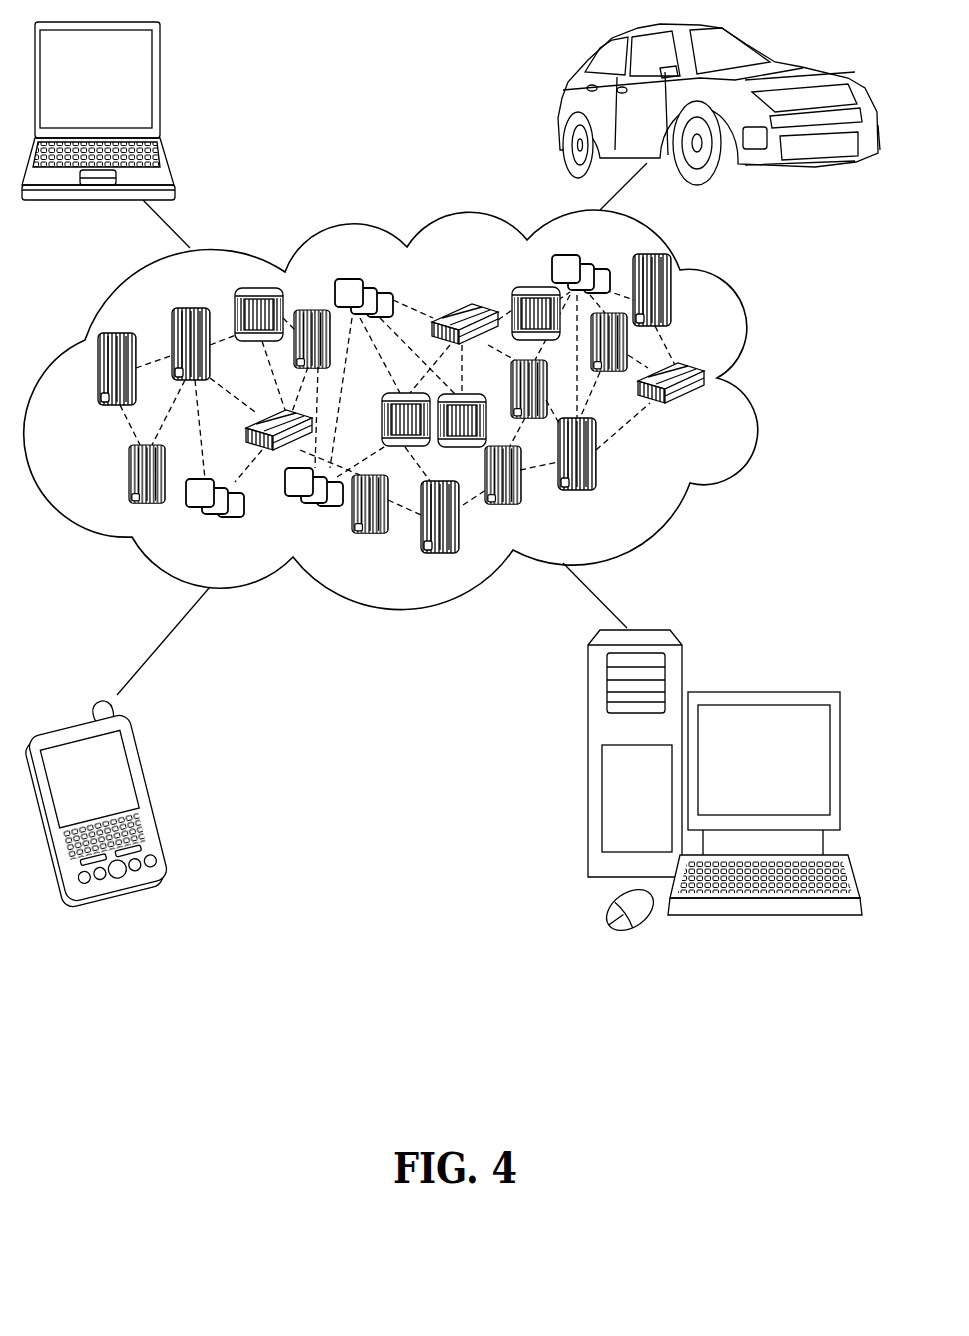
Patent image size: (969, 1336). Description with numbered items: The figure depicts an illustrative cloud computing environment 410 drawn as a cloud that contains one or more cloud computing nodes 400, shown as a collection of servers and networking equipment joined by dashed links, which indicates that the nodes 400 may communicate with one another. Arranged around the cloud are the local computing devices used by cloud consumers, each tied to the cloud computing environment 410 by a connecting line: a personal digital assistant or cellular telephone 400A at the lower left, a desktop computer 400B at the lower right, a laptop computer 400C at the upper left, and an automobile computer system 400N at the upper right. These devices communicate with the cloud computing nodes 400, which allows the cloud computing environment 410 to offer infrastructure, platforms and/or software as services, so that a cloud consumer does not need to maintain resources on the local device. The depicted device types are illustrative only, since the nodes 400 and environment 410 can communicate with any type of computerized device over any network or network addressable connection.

The cloud computing nodes 400 is at (428, 429).
The cloud computing environment 410 is at (764, 378).
The personal digital assistant (PDA) or cellular telephone 400A is at (152, 796).
The desktop computer 400B is at (762, 692).
The laptop computer 400C is at (163, 92).
The automobile computer system 400N is at (563, 110).